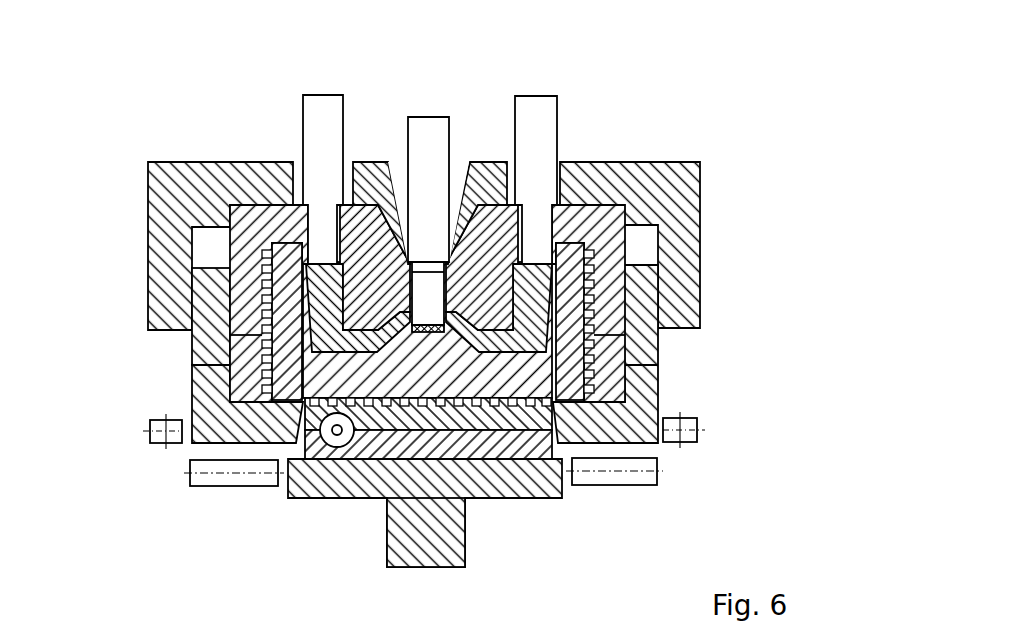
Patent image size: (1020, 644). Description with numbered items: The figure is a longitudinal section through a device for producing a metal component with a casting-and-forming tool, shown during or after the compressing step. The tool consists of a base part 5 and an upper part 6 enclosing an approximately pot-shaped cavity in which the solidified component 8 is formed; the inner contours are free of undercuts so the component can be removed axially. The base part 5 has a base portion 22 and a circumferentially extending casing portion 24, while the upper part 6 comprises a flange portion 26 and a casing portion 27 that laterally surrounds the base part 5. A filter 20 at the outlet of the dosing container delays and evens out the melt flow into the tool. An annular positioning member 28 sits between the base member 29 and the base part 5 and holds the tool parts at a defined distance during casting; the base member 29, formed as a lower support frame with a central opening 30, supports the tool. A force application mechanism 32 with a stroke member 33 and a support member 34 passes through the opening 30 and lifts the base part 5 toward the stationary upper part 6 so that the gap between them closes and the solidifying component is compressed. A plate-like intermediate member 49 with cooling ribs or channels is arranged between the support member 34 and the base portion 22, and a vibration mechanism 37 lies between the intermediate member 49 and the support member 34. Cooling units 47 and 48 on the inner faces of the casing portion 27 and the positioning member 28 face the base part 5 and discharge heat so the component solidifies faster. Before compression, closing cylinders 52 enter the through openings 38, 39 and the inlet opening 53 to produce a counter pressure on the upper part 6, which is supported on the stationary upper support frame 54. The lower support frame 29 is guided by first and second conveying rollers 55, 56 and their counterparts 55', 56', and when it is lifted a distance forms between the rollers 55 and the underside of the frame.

The base part 5 is at (624, 2).
The upper part 6 is at (614, 190).
The solidified component 8 is at (452, 327).
The filter 20 is at (428, 345).
The base portion 22 is at (447, 382).
The casing portion 24 is at (282, 295).
The flange portion 26 is at (256, 204).
The casing portion 27 is at (602, 256).
The positioning member 28 is at (238, 368).
The base member 29 is at (194, 396).
The central opening 30 is at (508, 405).
The force application mechanism 32 is at (320, 562).
The stroke member 33 is at (398, 548).
The support member 34 is at (362, 460).
The vibration mechanism 37 is at (330, 448).
The through opening 38 is at (326, 268).
The through opening 39 is at (546, 230).
The cooling unit 47 is at (590, 302).
The cooling unit 48 is at (590, 366).
The intermediate member 49 is at (493, 423).
The closing cylinders 52 is at (543, 123).
The inlet opening 53 is at (434, 290).
The upper support frame 54 is at (688, 160).
The first conveying rollers 55 is at (206, 493).
The right guide bar 55' is at (622, 496).
The second conveying rollers 56 is at (128, 434).
The right stop 56' is at (718, 430).